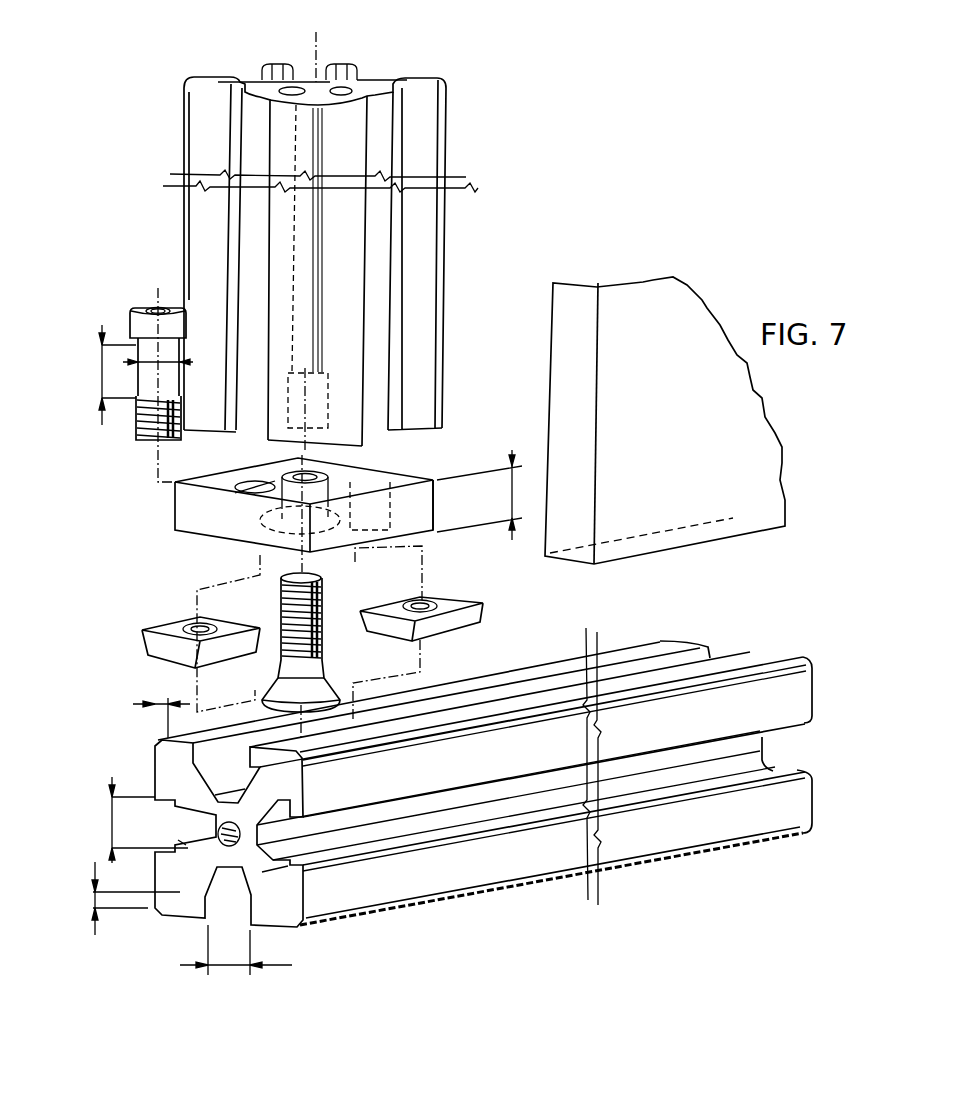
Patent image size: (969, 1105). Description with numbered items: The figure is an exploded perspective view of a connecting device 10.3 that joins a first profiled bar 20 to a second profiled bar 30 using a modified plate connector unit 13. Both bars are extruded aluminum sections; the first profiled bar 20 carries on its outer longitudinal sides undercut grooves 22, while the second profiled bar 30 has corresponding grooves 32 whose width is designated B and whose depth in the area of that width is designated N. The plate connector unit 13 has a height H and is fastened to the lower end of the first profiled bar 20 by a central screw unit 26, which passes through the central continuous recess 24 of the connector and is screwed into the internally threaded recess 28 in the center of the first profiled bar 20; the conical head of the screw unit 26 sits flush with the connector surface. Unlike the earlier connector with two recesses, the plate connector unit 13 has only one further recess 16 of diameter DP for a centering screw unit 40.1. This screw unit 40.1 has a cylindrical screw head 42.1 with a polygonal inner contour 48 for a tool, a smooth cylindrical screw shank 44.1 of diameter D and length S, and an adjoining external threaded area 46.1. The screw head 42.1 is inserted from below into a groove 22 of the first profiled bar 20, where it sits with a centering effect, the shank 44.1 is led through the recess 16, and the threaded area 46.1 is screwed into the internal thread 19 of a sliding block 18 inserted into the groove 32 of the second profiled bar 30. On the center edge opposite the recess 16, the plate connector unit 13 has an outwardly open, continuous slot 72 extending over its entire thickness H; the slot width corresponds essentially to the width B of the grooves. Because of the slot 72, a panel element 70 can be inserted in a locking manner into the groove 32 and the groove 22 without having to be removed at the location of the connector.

The first profiled bar 20 is at (456, 141).
The groove 22 is at (380, 92).
The recess with internal thread 28 is at (263, 424).
The screw unit 40.1 is at (113, 348).
The cylindrical screw head 42.1 is at (140, 313).
The polygonal inner contour 48 is at (162, 309).
The cylindrical screw shank 44.1 is at (137, 398).
The external threaded area 46.1 is at (137, 428).
The diameter of the screw shank D is at (130, 352).
The length of the screw shank S is at (118, 366).
The continuous recess 16 is at (308, 583).
The central continuous recess 24 is at (270, 518).
The slot 72 is at (363, 471).
The plate connector unit 13 is at (437, 507).
The diameter of the recess DP is at (232, 503).
The height of the plate connector unit H is at (488, 495).
The connecting device 10.3 is at (474, 415).
The sliding block 18 is at (308, 610).
The internal thread 19 is at (195, 624).
The central screw unit 26 is at (323, 598).
The second profiled bar 30 is at (461, 810).
The groove 32 is at (258, 882).
The groove width B is at (110, 812).
The groove depth N is at (155, 700).
The panel element 70 is at (767, 473).